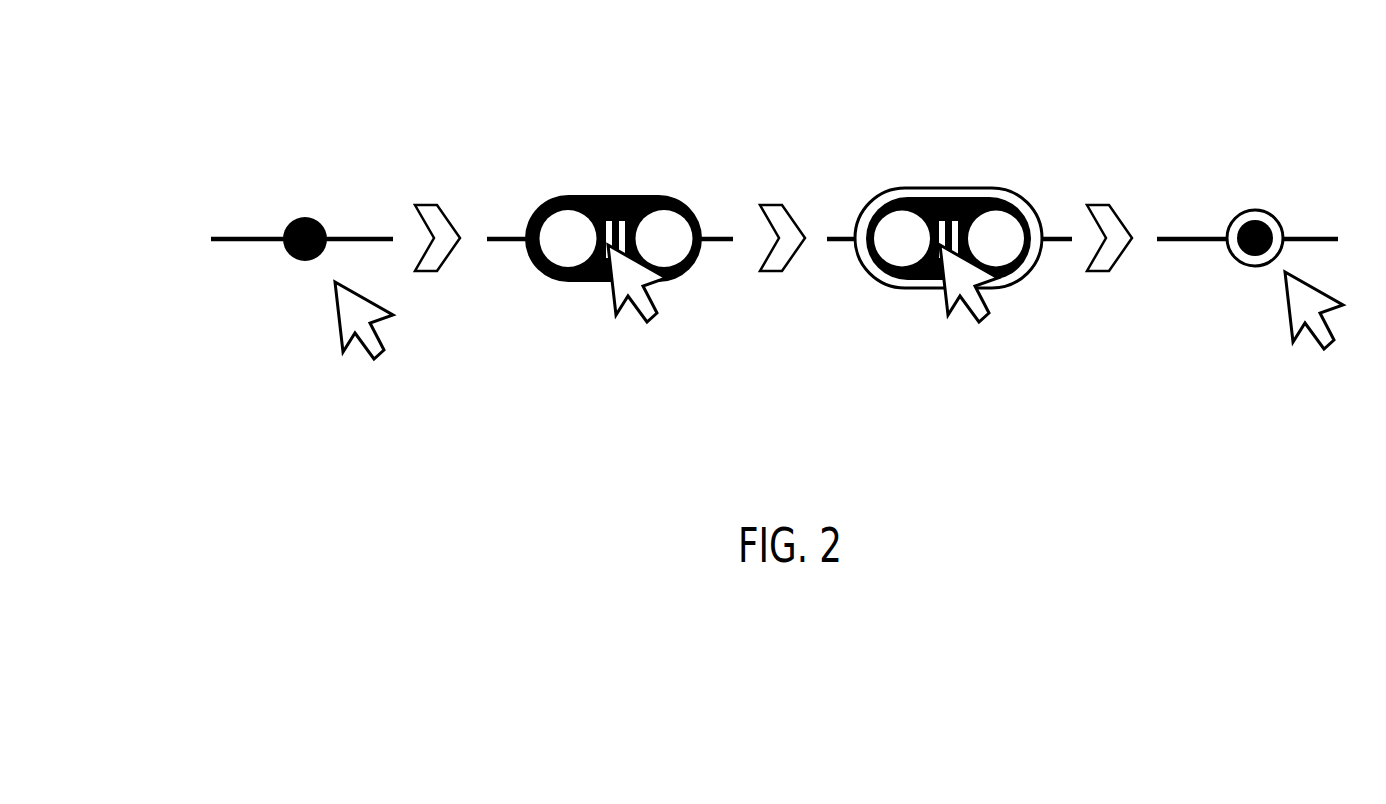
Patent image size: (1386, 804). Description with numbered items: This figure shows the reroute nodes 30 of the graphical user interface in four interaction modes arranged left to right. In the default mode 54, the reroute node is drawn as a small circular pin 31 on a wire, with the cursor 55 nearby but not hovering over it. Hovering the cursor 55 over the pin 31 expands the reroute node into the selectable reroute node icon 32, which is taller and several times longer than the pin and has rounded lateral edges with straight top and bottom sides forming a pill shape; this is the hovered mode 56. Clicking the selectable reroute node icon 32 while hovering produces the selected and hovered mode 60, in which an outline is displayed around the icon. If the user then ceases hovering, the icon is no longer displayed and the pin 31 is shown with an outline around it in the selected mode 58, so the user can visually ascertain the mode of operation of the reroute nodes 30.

The reroute nodes 30 is at (196, 180).
The pin 31 is at (305, 213).
The selectable reroute node icon 32 is at (947, 186).
The default mode 54 is at (352, 416).
The cursor 55 is at (381, 341).
The hovered mode 56 is at (657, 420).
The selected mode 58 is at (1298, 420).
The selected and hovered mode 60 is at (1038, 420).